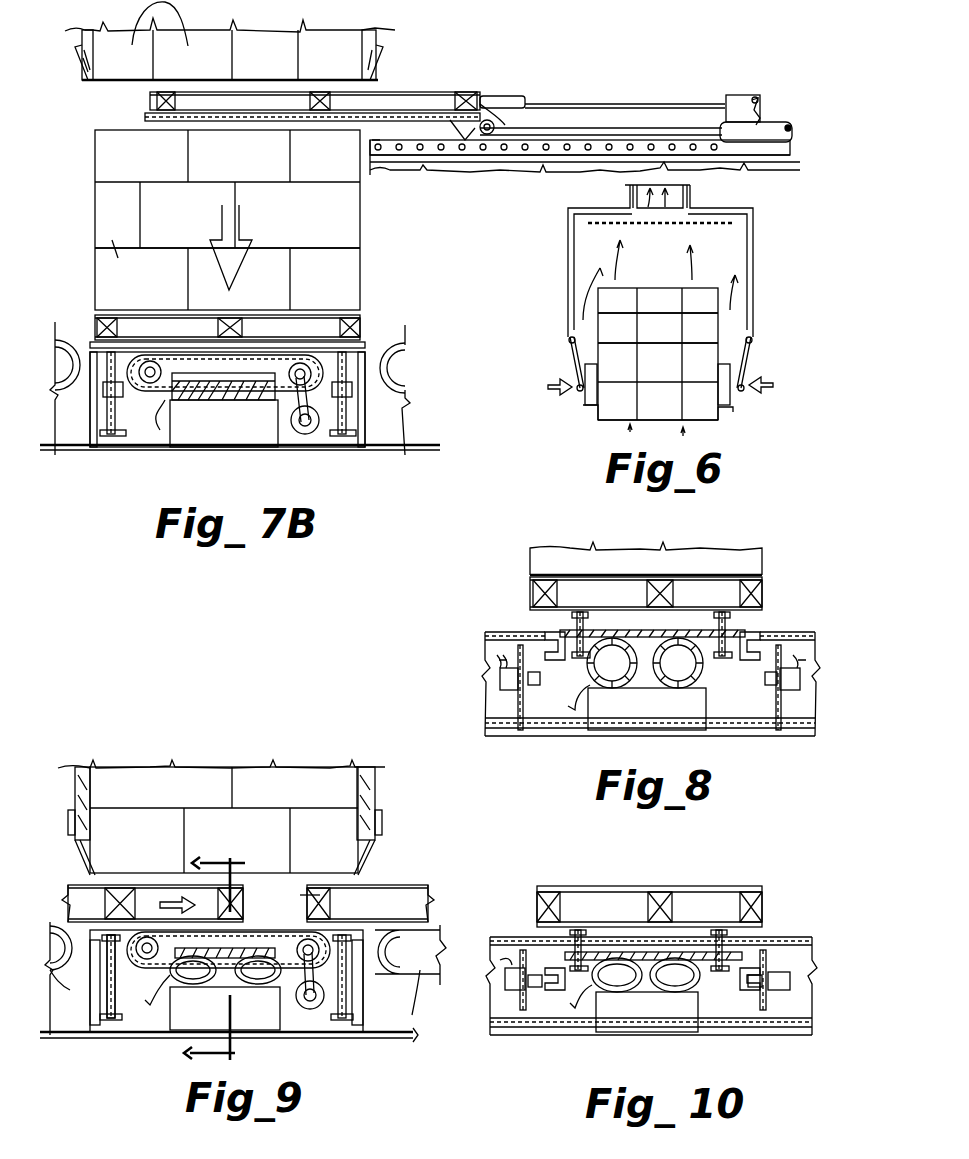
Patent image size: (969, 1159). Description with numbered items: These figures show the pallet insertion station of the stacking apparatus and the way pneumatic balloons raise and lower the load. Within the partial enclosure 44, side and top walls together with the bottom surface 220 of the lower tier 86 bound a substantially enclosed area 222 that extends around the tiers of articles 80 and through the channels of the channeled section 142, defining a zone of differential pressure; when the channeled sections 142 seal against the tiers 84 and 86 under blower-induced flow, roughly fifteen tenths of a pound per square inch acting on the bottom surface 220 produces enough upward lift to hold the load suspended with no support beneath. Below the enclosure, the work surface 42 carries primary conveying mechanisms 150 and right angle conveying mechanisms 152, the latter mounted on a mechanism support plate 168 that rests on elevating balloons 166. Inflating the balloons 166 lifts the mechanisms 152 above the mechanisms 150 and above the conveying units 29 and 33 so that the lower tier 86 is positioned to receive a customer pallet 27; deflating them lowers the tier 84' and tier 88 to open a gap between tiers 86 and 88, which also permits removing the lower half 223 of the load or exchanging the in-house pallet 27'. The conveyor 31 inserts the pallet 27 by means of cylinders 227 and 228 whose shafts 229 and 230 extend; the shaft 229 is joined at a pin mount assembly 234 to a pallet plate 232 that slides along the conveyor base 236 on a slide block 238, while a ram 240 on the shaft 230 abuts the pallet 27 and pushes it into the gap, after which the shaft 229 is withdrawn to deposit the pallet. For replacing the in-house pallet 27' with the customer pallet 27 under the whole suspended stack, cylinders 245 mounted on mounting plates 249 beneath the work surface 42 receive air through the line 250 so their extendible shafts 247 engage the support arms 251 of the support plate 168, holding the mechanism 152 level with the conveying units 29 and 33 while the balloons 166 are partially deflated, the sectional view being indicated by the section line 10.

In FIG. 7B, the customer pallet 27 is at (315, 59).
In FIG. 9, the customer pallet 27 is at (140, 885).
In FIG. 8, the in-house pallet 27' is at (646, 542).
In FIG. 9, the in-house pallet 27' is at (370, 883).
In FIG. 9, the conveying unit 29 is at (67, 990).
In FIG. 7B, the conveyor 31 is at (730, 165).
In FIG. 9, the conveyor 33 is at (397, 1000).
In FIG. 8, the work surface 42 is at (735, 625).
In FIG. 9, the work surface 42 is at (320, 895).
In FIG. 10, the work surface 42 is at (745, 930).
In FIG. 6, the partial enclosure 44 is at (568, 280).
In FIG. 9, the partial enclosure 44 is at (88, 775).
In FIG. 7B, the articles 80 is at (148, 208).
In FIG. 6, the articles 80 is at (647, 375).
In FIG. 6, the tiers 84 is at (698, 344).
In FIG. 9, the tiers 84 is at (224, 786).
In FIG. 7B, the tier 84' is at (206, 272).
In FIG. 7B, the lower tier 86 is at (108, 66).
In FIG. 6, the lower tier 86 is at (722, 415).
In FIG. 7B, the tier 88 is at (105, 130).
In FIG. 6, the channeled section 142 is at (583, 370).
In FIG. 7B, the primary conveying mechanism 150 is at (90, 447).
In FIG. 9, the primary conveying mechanism 150 is at (105, 1000).
In FIG. 10, the primary conveying mechanism 150 is at (515, 985).
In FIG. 8, the right angle conveying mechanism 152 is at (580, 612).
In FIG. 9, the right angle conveying mechanism 152 is at (118, 975).
In FIG. 10, the right angle conveying mechanism 152 is at (618, 940).
In FIG. 7B, the pneumatic balloons 166 is at (245, 400).
In FIG. 8, the pneumatic balloons 166 is at (640, 680).
In FIG. 9, the pneumatic balloons 166 is at (212, 990).
In FIG. 10, the pneumatic balloons 166 is at (618, 985).
In FIG. 8, the mechanism support plate 168 is at (603, 630).
In FIG. 10, the mechanism support plate 168 is at (650, 958).
In FIG. 6, the bottom surface 220 is at (700, 428).
In FIG. 6, the substantially enclosed area 222 is at (720, 255).
In FIG. 7B, the lower half 223 is at (110, 250).
In FIG. 7B, the cylinder 227 is at (760, 100).
In FIG. 7B, the cylinder 228 is at (738, 98).
In FIG. 7B, the shaft 229 is at (598, 130).
In FIG. 7B, the shaft 230 is at (575, 105).
In FIG. 7B, the pallet plate 232 is at (450, 110).
In FIG. 7B, the pin mount assembly 234 is at (482, 120).
In FIG. 7B, the conveyor base 236 is at (395, 160).
In FIG. 7B, the slide block 238 is at (468, 132).
In FIG. 7B, the ram 240 is at (500, 98).
In FIG. 8, the cylinder 245 is at (498, 683).
In FIG. 10, the cylinder 245 is at (770, 975).
In FIG. 8, the extendible shaft 247 is at (540, 685).
In FIG. 10, the extendible shaft 247 is at (540, 988).
In FIG. 8, the mounting plate 249 is at (520, 700).
In FIG. 10, the mounting plate 249 is at (780, 965).
In FIG. 8, the line 250 is at (500, 668).
In FIG. 8, the support arm 251 is at (548, 645).
In FIG. 10, the support arm 251 is at (555, 985).
In FIG. 9, the section line 10 is at (194, 952).